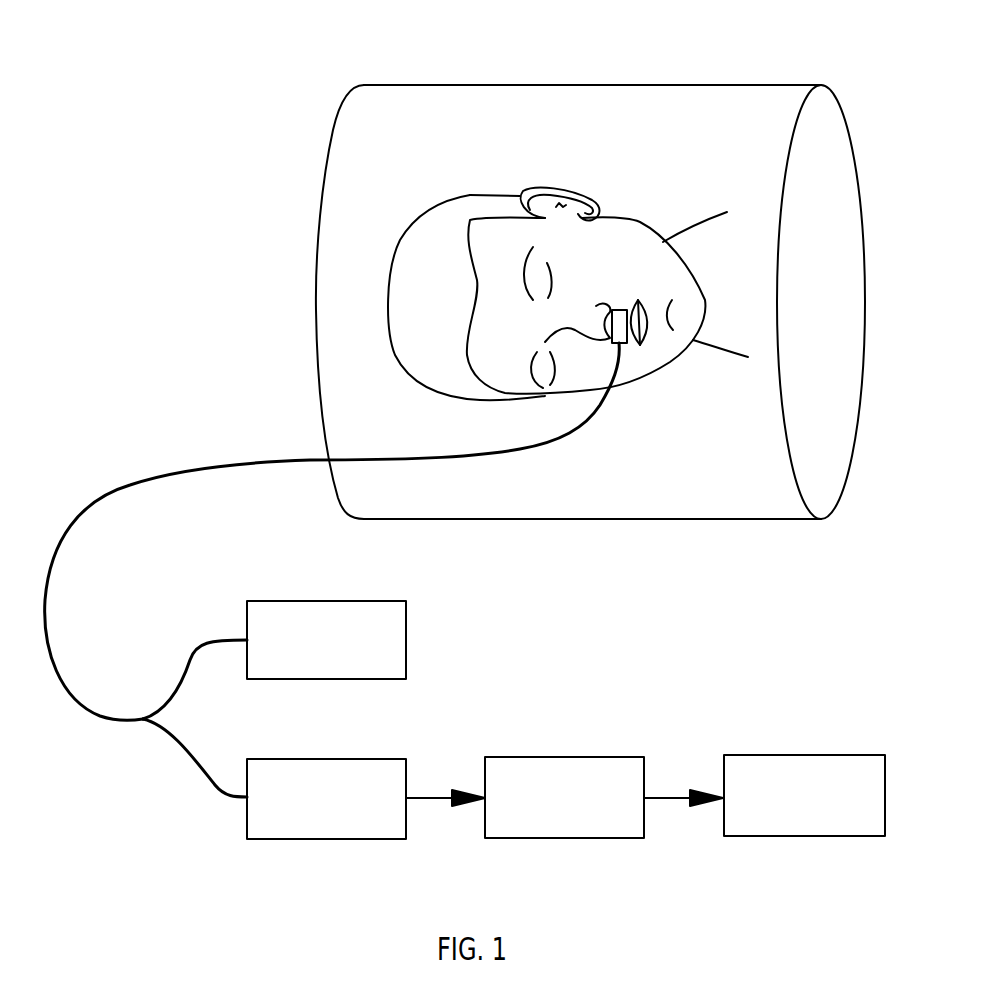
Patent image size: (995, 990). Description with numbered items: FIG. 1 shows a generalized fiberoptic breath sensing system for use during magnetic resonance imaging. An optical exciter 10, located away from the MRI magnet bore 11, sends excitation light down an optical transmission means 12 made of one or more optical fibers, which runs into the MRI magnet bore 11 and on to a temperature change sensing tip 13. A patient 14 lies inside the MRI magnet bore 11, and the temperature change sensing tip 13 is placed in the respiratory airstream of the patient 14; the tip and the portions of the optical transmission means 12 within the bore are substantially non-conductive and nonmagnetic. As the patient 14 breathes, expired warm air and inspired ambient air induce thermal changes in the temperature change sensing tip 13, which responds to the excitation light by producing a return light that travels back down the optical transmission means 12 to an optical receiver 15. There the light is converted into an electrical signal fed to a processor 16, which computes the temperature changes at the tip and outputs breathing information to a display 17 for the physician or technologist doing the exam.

The optical exciter 10 is at (370, 601).
The MRI magnet bore 11 is at (430, 84).
The optical transmission means 12 is at (168, 472).
The temperature change sensing tip 13 is at (619, 310).
The patient 14 is at (468, 195).
The optical receiver 15 is at (292, 759).
The processor 16 is at (527, 757).
The display 17 is at (770, 755).